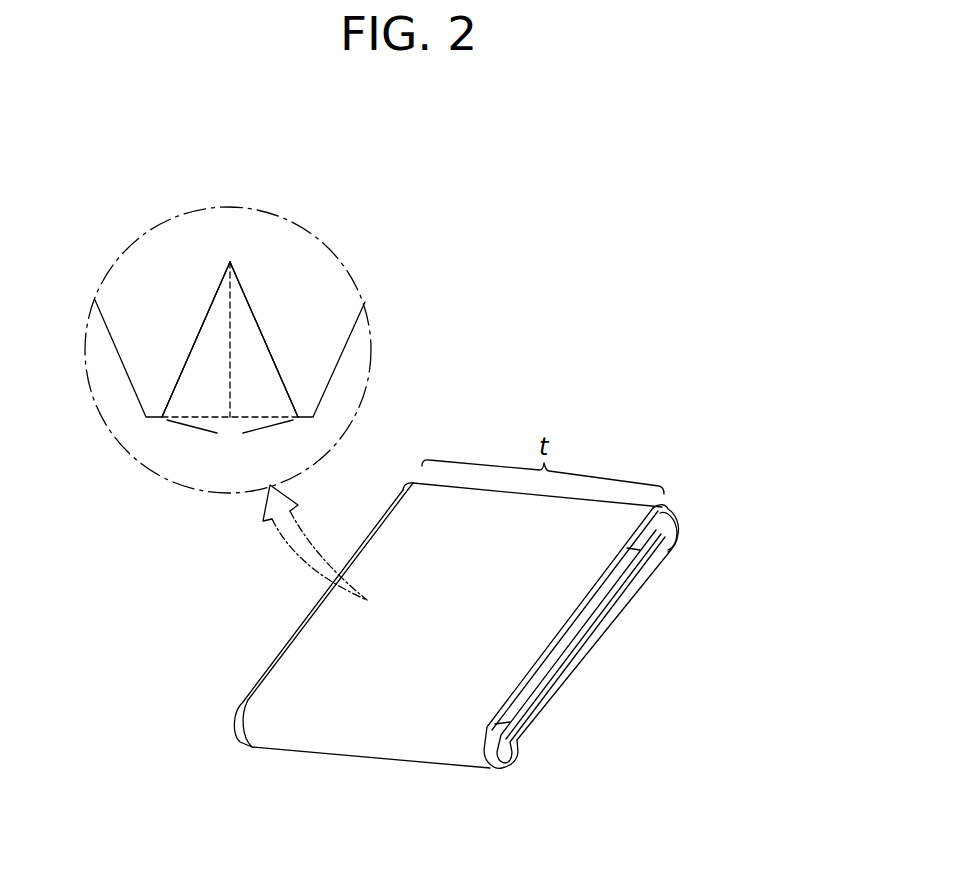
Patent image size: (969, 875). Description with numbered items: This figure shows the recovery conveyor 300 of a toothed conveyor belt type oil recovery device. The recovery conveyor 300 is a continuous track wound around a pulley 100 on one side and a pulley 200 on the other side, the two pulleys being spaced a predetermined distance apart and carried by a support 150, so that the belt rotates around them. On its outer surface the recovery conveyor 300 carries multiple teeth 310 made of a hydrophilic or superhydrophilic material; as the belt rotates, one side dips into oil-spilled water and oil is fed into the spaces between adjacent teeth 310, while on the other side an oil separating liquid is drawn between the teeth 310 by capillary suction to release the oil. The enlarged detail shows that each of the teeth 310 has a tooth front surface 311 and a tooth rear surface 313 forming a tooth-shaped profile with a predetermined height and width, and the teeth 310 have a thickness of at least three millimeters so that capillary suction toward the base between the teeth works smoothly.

The pulley on one side 100 is at (493, 770).
The support 150 is at (552, 692).
The pulley on the other side 200 is at (668, 510).
The recovery conveyor 300 is at (573, 618).
The teeth 310 is at (283, 347).
The tooth front surface 311 is at (198, 327).
The tooth rear surface 313 is at (250, 302).